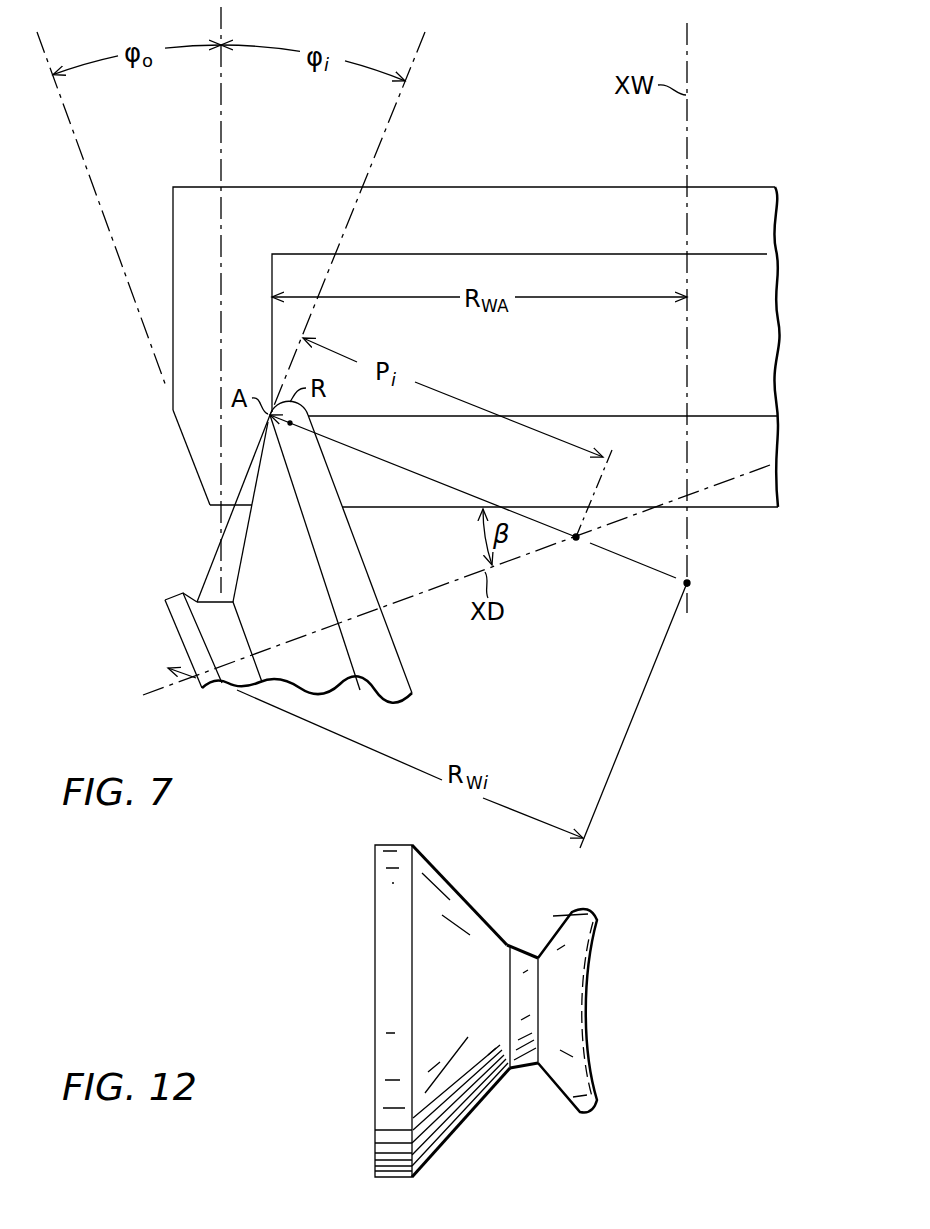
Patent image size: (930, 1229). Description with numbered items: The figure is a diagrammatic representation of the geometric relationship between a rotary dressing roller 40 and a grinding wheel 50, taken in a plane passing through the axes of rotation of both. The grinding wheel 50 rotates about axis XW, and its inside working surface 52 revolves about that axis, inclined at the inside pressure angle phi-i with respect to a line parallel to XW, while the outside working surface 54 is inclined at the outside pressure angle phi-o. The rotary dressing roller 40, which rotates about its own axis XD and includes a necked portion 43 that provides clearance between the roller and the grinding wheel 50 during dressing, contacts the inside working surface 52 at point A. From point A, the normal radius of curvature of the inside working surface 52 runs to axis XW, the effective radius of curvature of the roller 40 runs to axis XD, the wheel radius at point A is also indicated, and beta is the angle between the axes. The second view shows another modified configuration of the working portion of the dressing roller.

The rotary dressing roller 40 is at (345, 680).
The necked portion 43 is at (238, 676).
The grinding wheel 50 is at (537, 202).
The inside working surface 52 is at (252, 481).
The outside working surface 54 is at (192, 458).